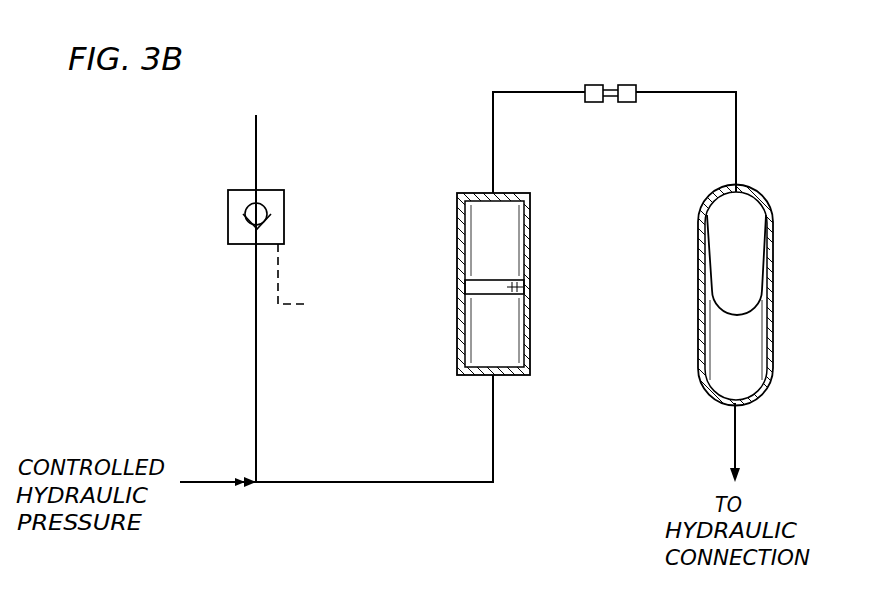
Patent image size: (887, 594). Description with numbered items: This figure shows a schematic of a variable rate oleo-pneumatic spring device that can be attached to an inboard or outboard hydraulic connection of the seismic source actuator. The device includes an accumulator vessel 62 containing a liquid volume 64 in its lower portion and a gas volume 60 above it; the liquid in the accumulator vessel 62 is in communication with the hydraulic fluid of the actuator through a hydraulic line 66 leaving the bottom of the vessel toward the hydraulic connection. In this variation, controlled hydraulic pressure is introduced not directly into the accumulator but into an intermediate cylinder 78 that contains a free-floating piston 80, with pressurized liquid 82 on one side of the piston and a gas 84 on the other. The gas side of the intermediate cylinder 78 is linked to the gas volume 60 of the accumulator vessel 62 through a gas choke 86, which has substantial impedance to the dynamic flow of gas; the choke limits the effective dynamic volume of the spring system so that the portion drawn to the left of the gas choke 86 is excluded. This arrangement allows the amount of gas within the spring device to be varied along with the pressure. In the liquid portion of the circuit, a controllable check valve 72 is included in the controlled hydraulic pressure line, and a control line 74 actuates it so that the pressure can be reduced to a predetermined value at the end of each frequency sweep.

The gas 60 is at (733, 254).
The accumulator vessel 62 is at (763, 203).
The liquid 64 is at (730, 352).
The hydraulic line 66 is at (737, 444).
The check valve 72 is at (228, 198).
The control line 74 is at (303, 301).
The intermediate cylinder 78 is at (530, 201).
The free-floating piston 80 is at (524, 286).
The pressurized liquid 82 is at (505, 333).
The gas 84 is at (500, 242).
The gas choke 86 is at (610, 85).